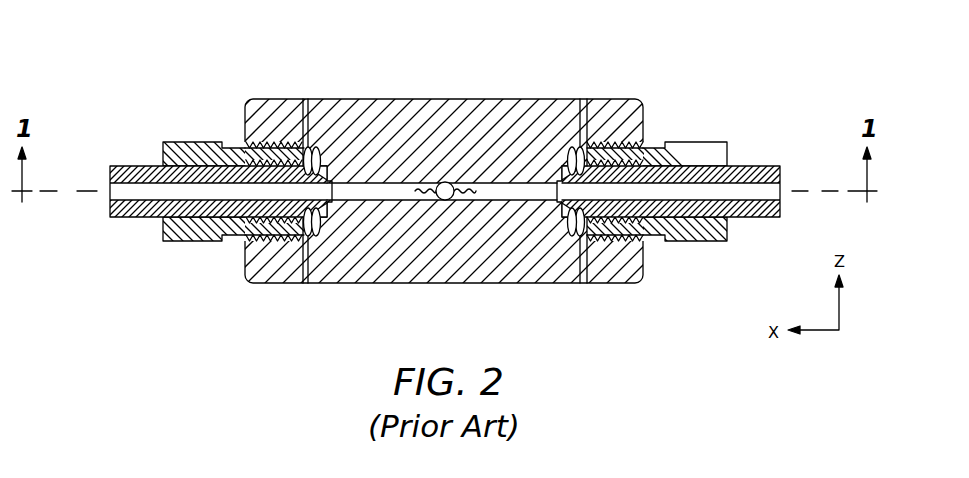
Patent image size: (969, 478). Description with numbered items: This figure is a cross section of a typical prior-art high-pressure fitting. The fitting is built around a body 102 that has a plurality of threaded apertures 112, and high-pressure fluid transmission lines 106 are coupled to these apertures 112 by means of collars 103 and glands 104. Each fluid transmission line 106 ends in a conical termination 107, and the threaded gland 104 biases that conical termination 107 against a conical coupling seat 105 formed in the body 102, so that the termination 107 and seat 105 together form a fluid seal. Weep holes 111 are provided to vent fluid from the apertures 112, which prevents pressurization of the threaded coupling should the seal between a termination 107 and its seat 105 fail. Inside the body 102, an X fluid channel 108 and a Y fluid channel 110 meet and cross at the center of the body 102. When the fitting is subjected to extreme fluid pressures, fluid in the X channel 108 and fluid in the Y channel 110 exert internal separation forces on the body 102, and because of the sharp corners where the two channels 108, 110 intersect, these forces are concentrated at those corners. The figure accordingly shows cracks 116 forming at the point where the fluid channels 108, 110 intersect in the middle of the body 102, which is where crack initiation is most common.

The body 102 is at (406, 110).
The collar 103 is at (245, 158).
The gland 104 is at (196, 142).
The conical coupling seat 105 is at (247, 256).
The high-pressure fluid transmission line 106 is at (132, 218).
The conical termination 107 is at (322, 176).
The X fluid channel 108 is at (380, 201).
The Y fluid channel 110 is at (450, 183).
The weep hole 111 is at (306, 99).
The threaded aperture 112 is at (572, 147).
The crack 116 is at (428, 195).